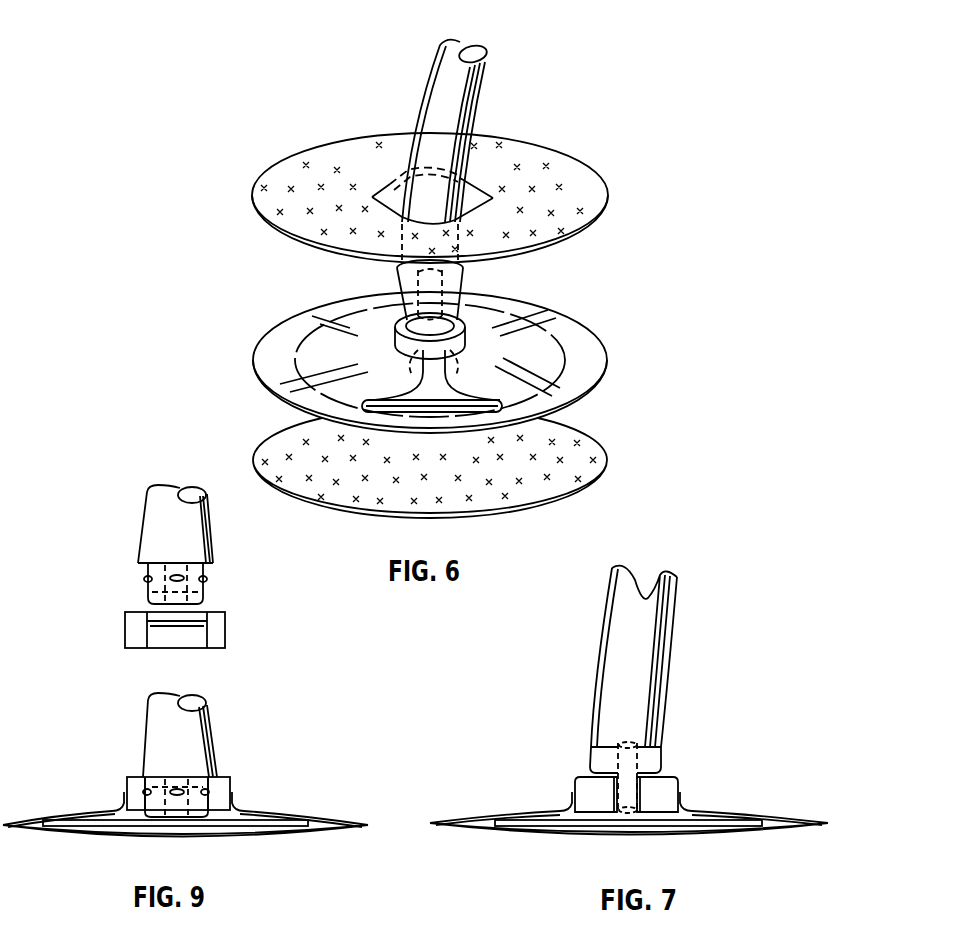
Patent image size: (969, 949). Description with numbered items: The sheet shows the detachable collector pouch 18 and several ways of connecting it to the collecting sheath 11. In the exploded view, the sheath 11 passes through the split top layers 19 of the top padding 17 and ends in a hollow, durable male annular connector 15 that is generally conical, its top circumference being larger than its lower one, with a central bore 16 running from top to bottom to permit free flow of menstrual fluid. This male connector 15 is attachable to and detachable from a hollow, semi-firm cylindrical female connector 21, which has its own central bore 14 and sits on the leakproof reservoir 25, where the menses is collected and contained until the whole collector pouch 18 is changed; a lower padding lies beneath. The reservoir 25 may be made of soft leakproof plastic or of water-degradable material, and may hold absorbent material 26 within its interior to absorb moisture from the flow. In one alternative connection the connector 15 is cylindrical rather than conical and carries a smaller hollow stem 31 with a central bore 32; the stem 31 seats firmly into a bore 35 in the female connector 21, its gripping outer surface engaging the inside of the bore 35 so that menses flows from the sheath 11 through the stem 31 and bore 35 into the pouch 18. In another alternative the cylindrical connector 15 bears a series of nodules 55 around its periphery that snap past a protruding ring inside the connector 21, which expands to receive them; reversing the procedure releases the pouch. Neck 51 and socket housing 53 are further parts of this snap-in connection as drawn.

In FIG. 6, the collecting sheath 11 is at (425, 82).
In FIG. 9, the collecting sheath 11 is at (143, 520).
In FIG. 7, the collecting sheath 11 is at (670, 660).
In FIG. 6, the central bore 14 is at (545, 372).
In FIG. 6, the male annular connector 15 is at (410, 293).
In FIG. 7, the male annular connector 15 is at (667, 772).
In FIG. 6, the central bore 16 is at (430, 283).
In FIG. 6, the top padding 17 is at (543, 157).
In FIG. 6, the collector pouch 18 is at (225, 150).
In FIG. 9, the collector pouch 18 is at (305, 805).
In FIG. 7, the collector pouch 18 is at (828, 843).
In FIG. 6, the split top layers 19 is at (465, 197).
In FIG. 6, the female connector 21 is at (462, 322).
In FIG. 9, the female connector 21 is at (118, 806).
In FIG. 7, the female connector 21 is at (687, 805).
In FIG. 6, the leakproof reservoir 25 is at (578, 342).
In FIG. 9, the leakproof reservoir 25 is at (267, 835).
In FIG. 7, the leakproof reservoir 25 is at (750, 810).
In FIG. 6, the absorbent material 26 is at (440, 411).
In FIG. 9, the absorbent material 26 is at (93, 825).
In FIG. 7, the absorbent material 26 is at (562, 825).
In FIG. 7, the hollow stem 31 is at (620, 793).
In FIG. 7, the central bore 32 is at (637, 745).
In FIG. 7, the bore 35 is at (620, 808).
In FIG. 9, the neck 51 is at (213, 765).
In FIG. 9, the socket housing 53 is at (125, 627).
In FIG. 9, the nodules 55 is at (150, 622).